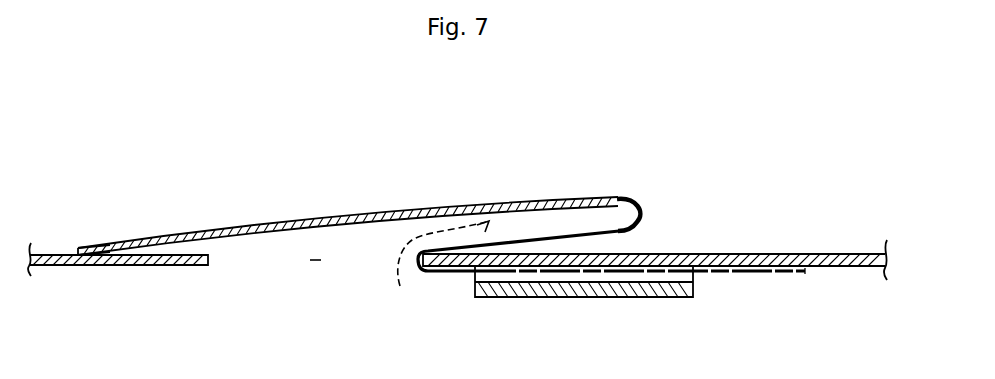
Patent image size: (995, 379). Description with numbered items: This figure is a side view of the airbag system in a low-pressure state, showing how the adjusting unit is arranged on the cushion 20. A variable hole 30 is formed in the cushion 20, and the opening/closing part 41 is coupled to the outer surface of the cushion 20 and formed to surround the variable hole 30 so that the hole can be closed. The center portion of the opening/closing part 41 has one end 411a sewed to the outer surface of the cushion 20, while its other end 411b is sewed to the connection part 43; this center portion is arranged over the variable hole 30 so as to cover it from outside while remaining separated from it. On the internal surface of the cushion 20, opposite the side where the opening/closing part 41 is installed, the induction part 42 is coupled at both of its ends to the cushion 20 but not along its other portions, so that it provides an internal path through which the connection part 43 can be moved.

The cushion 20 is at (814, 253).
The variable hole 30 is at (315, 262).
The opening/closing part 41 is at (304, 221).
The end of center opening/closing part 411a is at (75, 249).
The other end of center opening/closing part 411b is at (623, 195).
The induction part 42 is at (556, 298).
The connection part 43 is at (778, 276).